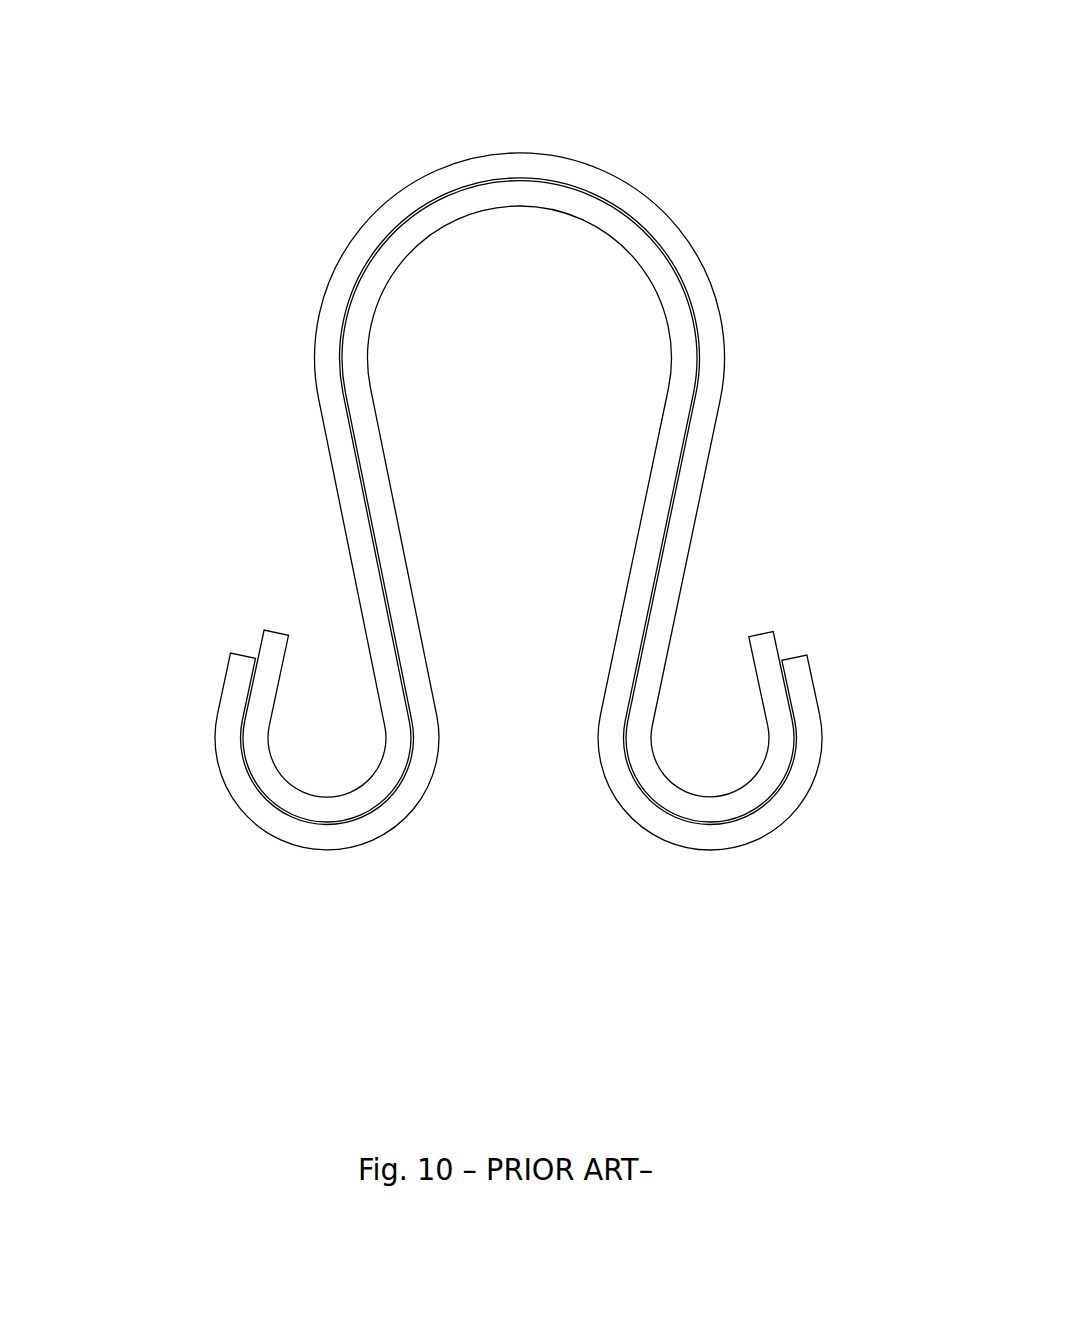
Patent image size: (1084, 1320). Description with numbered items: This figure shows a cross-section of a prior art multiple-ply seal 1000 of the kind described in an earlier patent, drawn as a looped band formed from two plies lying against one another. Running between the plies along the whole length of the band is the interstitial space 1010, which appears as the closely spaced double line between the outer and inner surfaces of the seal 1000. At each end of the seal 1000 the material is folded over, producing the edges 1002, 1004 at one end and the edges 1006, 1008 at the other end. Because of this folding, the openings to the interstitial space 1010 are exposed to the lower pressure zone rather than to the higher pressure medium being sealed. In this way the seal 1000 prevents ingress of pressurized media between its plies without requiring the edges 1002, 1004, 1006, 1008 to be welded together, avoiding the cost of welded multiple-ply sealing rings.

The seal 1000 is at (690, 128).
The edge 1002 is at (758, 633).
The edge 1004 is at (790, 657).
The edge 1006 is at (282, 635).
The edge 1008 is at (253, 657).
The interstitial space 1010 is at (505, 179).